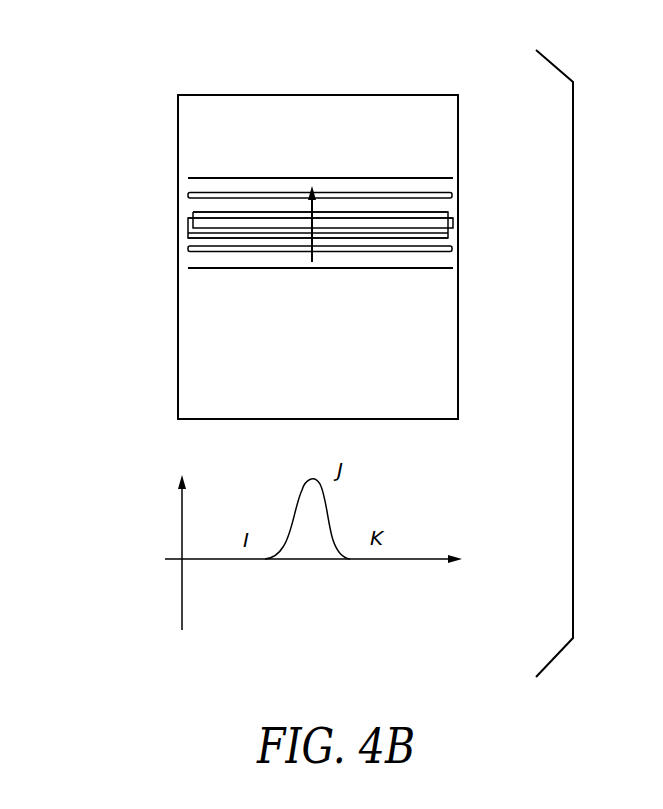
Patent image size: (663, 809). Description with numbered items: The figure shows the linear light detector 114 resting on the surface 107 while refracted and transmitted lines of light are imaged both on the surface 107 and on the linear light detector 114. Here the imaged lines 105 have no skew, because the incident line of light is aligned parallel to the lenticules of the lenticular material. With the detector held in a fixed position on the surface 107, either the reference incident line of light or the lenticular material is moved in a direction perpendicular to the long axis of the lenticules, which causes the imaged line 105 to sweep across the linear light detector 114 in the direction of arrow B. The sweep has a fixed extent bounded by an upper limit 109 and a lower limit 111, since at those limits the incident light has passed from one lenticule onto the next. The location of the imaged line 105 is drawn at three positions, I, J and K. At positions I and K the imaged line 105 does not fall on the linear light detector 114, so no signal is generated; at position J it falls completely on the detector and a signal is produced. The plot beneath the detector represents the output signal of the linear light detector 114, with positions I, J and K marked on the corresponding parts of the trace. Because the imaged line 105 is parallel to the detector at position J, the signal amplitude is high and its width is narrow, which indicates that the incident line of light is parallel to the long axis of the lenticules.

The surface 107 is at (200, 124).
The upper limit 109 is at (407, 178).
The imaged line 105 is at (195, 225).
The linear light detector 114 is at (192, 238).
The lower limit 111 is at (358, 270).
The direction of sweep arrow B is at (313, 220).
The imaged line position K is at (455, 195).
The imaged line position J is at (443, 228).
The imaged line position I is at (452, 253).